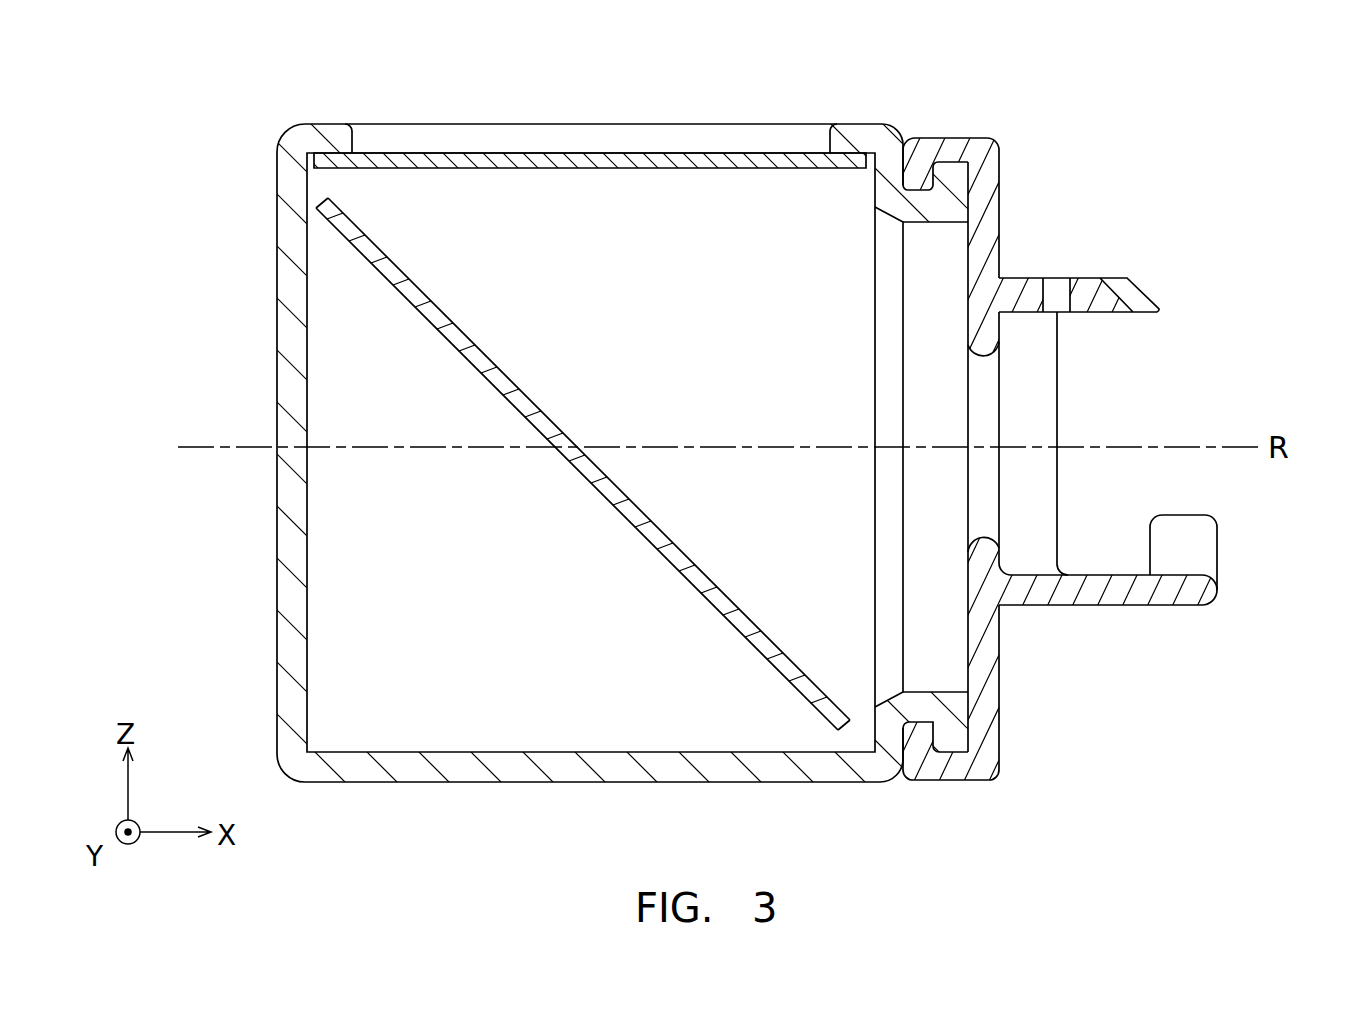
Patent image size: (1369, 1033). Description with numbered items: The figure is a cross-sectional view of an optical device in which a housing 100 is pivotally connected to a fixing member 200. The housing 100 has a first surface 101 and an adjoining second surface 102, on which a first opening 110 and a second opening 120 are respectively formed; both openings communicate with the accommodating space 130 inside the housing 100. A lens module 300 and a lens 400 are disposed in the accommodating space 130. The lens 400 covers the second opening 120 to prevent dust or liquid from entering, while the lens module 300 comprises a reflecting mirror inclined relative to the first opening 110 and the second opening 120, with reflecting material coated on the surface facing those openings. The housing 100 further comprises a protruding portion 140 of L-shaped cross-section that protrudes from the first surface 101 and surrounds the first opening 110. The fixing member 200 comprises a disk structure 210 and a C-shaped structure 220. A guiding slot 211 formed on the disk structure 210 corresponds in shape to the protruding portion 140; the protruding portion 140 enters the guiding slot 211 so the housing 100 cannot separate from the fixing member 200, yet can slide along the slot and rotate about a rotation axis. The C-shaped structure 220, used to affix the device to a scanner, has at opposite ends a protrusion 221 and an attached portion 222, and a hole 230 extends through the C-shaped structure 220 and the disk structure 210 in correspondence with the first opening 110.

The housing 100 is at (292, 648).
The first surface 101 is at (920, 760).
The second surface 102 is at (854, 128).
The first opening 110 is at (890, 335).
The second opening 120 is at (662, 158).
The accommodating space 130 is at (368, 548).
The protruding portion 140 is at (955, 740).
The fixing member 200 is at (974, 450).
The disk structure 210 is at (985, 683).
The guiding slot 211 is at (949, 163).
The C-shaped structure 220 is at (1040, 590).
The protrusion 221 is at (1188, 545).
The attached portion 222 is at (1145, 295).
The hole 230 is at (985, 393).
The lens module 300 is at (405, 297).
The lens 400 is at (491, 160).